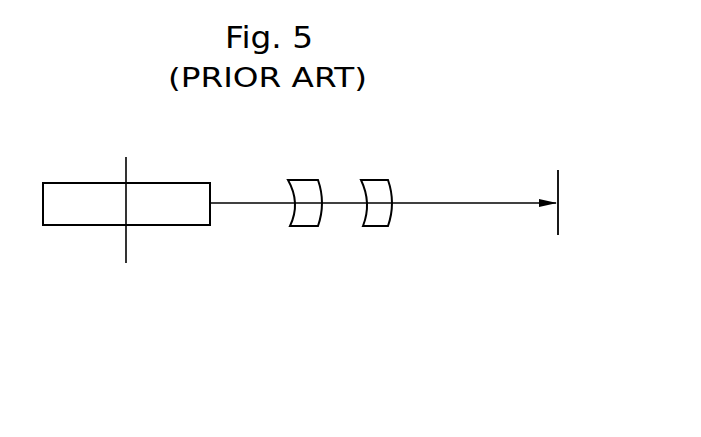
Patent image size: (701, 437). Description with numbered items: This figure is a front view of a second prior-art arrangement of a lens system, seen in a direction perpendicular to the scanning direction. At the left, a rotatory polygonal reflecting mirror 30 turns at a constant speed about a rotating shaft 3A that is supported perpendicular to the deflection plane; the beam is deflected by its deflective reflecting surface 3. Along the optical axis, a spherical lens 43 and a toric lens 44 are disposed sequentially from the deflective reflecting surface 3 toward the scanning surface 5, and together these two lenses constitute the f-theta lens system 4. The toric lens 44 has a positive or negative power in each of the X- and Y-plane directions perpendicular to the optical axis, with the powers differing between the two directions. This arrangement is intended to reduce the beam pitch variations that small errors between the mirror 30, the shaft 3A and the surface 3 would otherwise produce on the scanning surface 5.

The deflective reflecting surface 3 is at (211, 188).
The rotating shaft 3A is at (128, 172).
The rotatory polygonal reflecting mirror 30 is at (196, 220).
The f-theta lens system 4 is at (347, 191).
The spherical lens 43 is at (312, 228).
The toric lens 44 is at (384, 228).
The scanning surface 5 is at (557, 220).